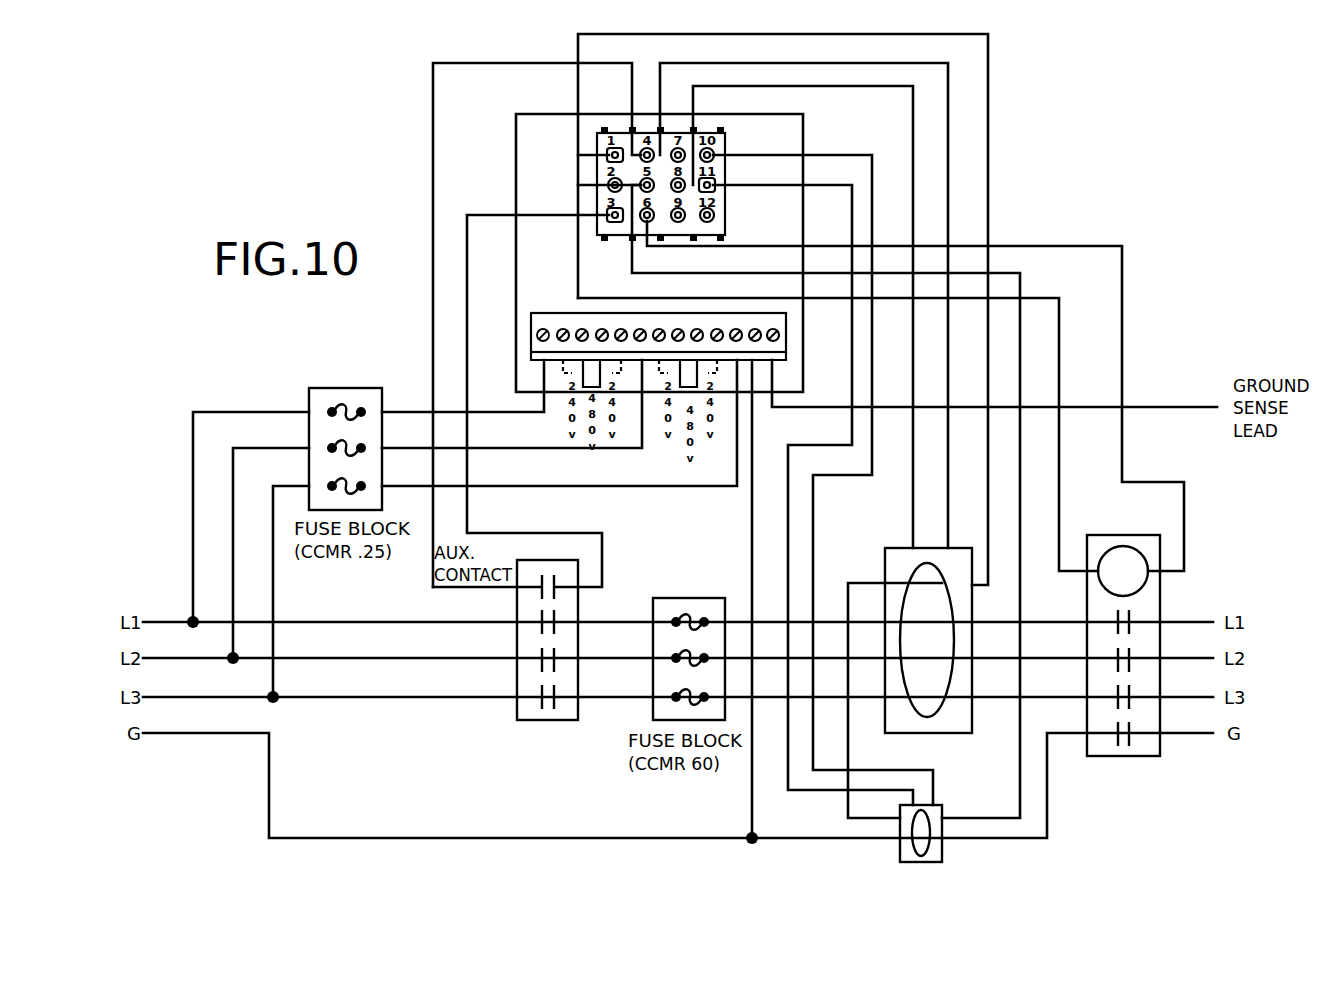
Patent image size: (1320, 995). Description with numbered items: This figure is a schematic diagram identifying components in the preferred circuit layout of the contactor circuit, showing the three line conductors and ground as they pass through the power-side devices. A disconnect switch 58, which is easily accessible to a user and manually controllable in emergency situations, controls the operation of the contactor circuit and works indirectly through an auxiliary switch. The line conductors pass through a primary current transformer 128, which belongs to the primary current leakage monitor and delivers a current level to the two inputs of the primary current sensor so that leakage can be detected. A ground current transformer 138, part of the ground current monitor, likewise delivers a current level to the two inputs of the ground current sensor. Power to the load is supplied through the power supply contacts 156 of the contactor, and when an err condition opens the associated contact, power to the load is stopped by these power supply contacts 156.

The disconnect switch 58 is at (514, 705).
The primary current transformer 128 is at (885, 565).
The ground current transformer 138 is at (945, 812).
The power supply contacts 156 is at (1160, 745).